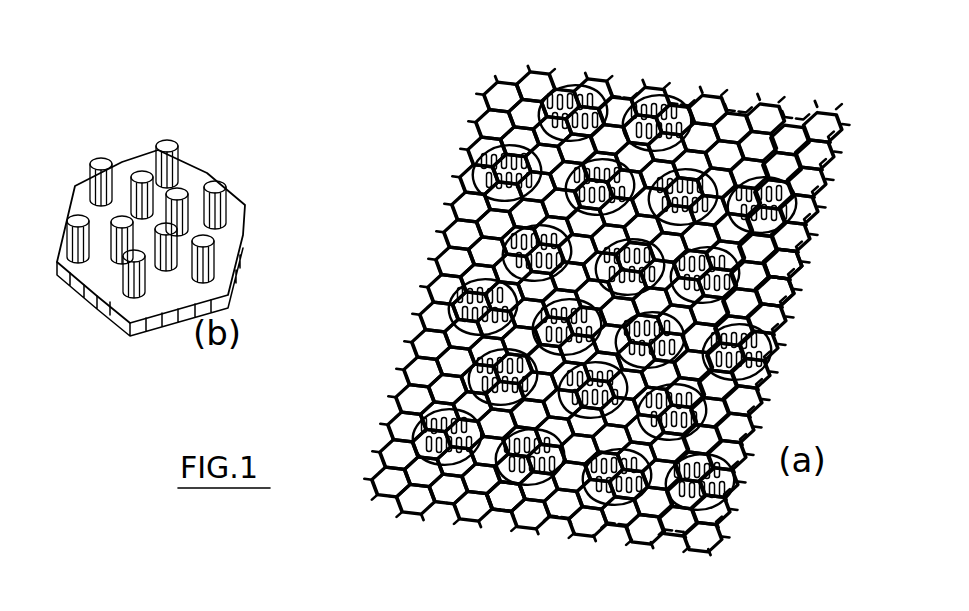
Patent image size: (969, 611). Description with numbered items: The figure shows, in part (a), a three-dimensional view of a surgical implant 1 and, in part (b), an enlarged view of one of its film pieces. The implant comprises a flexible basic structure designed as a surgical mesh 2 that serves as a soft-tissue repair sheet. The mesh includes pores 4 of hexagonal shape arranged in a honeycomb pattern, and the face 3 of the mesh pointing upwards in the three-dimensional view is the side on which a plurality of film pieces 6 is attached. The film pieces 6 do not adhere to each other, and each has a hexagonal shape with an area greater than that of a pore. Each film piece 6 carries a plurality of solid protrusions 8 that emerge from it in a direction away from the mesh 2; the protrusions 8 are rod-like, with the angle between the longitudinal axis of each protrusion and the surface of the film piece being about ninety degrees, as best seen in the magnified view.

The surgical implant 1 is at (440, 150).
The surgical mesh 2 is at (770, 100).
The face of the mesh 3 is at (507, 523).
The pores 4 is at (797, 290).
The film piece 6 is at (563, 86).
The protrusions 8 is at (170, 145).